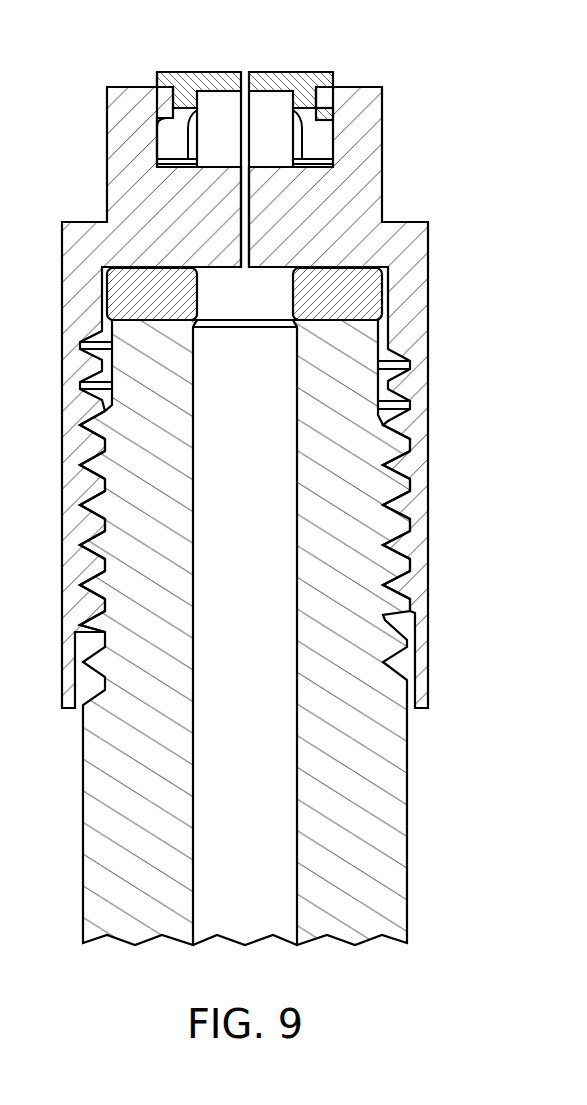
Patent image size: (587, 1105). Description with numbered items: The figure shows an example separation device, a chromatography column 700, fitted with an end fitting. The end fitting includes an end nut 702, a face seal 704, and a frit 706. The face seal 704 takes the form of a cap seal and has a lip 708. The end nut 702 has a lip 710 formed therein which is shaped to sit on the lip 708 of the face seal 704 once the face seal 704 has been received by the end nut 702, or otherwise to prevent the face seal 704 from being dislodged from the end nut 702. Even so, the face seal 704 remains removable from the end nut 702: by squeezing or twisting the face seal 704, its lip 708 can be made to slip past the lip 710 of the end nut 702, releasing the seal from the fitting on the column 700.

The chromatography column 700 is at (398, 843).
The end nut 702 is at (76, 222).
The face seal 704 is at (293, 72).
The frit 706 is at (152, 277).
The lip 708 is at (323, 143).
The lip 710 is at (323, 104).